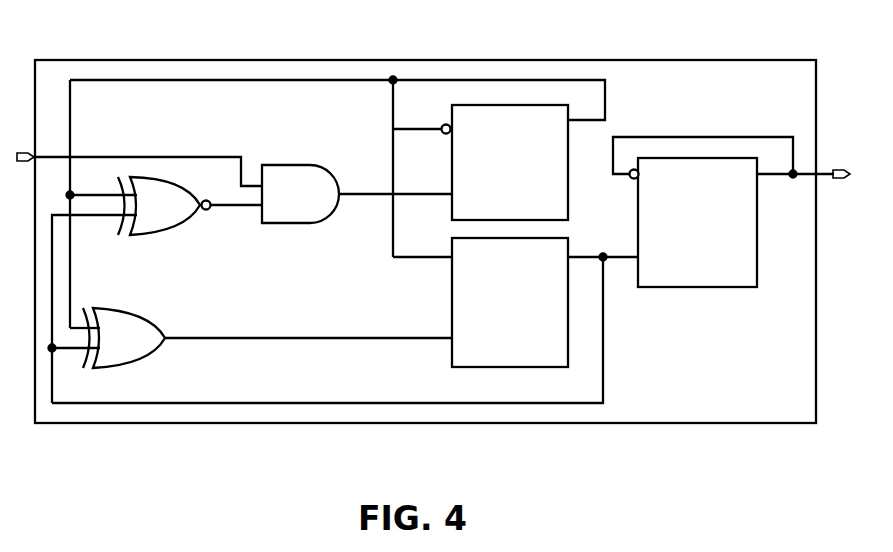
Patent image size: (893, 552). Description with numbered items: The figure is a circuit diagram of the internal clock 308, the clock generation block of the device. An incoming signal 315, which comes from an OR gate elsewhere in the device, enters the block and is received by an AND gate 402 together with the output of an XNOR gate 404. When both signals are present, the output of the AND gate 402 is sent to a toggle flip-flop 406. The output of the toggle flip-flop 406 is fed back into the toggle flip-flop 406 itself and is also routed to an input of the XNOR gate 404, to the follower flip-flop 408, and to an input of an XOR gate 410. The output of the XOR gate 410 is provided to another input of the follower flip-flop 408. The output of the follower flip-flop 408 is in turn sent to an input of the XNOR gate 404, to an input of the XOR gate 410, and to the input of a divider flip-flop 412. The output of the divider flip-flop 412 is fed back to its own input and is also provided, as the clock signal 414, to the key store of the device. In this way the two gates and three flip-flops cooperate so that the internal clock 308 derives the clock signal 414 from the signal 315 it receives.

The internal clock 308 is at (786, 91).
The signal 315 is at (53, 156).
The AND gate 402 is at (313, 204).
The XNOR gate 404 is at (183, 215).
The toggle flip-flop 406 is at (491, 206).
The follower flip-flop 408 is at (491, 346).
The XOR gate 410 is at (146, 348).
The divider flip-flop 412 is at (678, 266).
The clock signal 414 is at (835, 180).